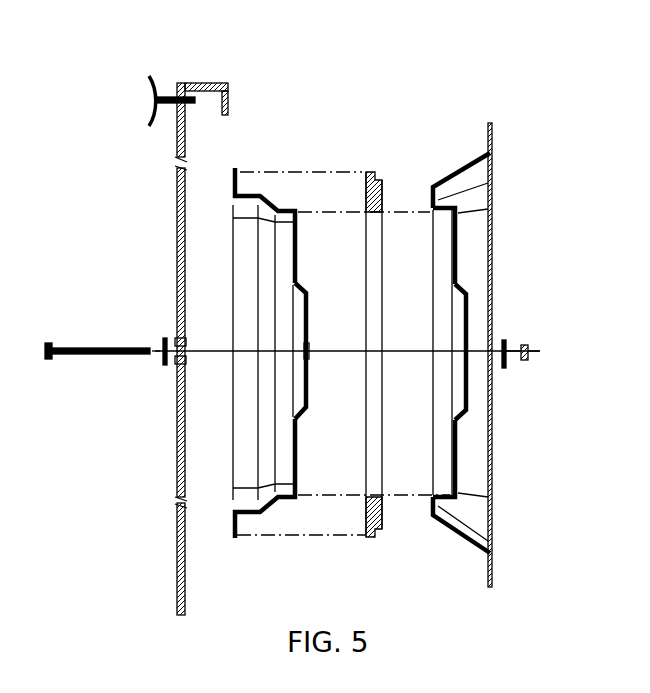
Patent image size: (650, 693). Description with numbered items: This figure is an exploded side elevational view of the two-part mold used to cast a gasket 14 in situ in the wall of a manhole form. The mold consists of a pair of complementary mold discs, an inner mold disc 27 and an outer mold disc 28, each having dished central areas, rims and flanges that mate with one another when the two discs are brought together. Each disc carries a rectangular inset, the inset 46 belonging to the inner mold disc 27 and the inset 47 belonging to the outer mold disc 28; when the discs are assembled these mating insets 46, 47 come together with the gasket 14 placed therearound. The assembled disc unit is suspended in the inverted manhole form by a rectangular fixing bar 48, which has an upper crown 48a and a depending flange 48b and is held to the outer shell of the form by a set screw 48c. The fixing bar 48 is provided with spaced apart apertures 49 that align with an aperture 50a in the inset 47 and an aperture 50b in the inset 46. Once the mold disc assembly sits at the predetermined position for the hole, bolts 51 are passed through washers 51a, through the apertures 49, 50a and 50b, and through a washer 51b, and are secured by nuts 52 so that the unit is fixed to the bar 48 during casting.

The gasket 14 is at (385, 182).
The inner mold disc 27 is at (450, 180).
The outer mold disc 28 is at (258, 195).
The rectangular inset 46 is at (470, 292).
The rectangular inset 47 is at (311, 297).
The rectangular fixing bar 48 is at (174, 450).
The upper crown 48a is at (212, 84).
The depending flange 48b is at (232, 98).
The set screw 48c is at (170, 103).
The apertures 49 is at (176, 334).
The aperture 50a is at (312, 380).
The aperture 50b is at (468, 300).
The bolts 51 is at (78, 348).
The washer 51a is at (160, 362).
The washer 51b is at (505, 340).
The nuts 52 is at (530, 344).